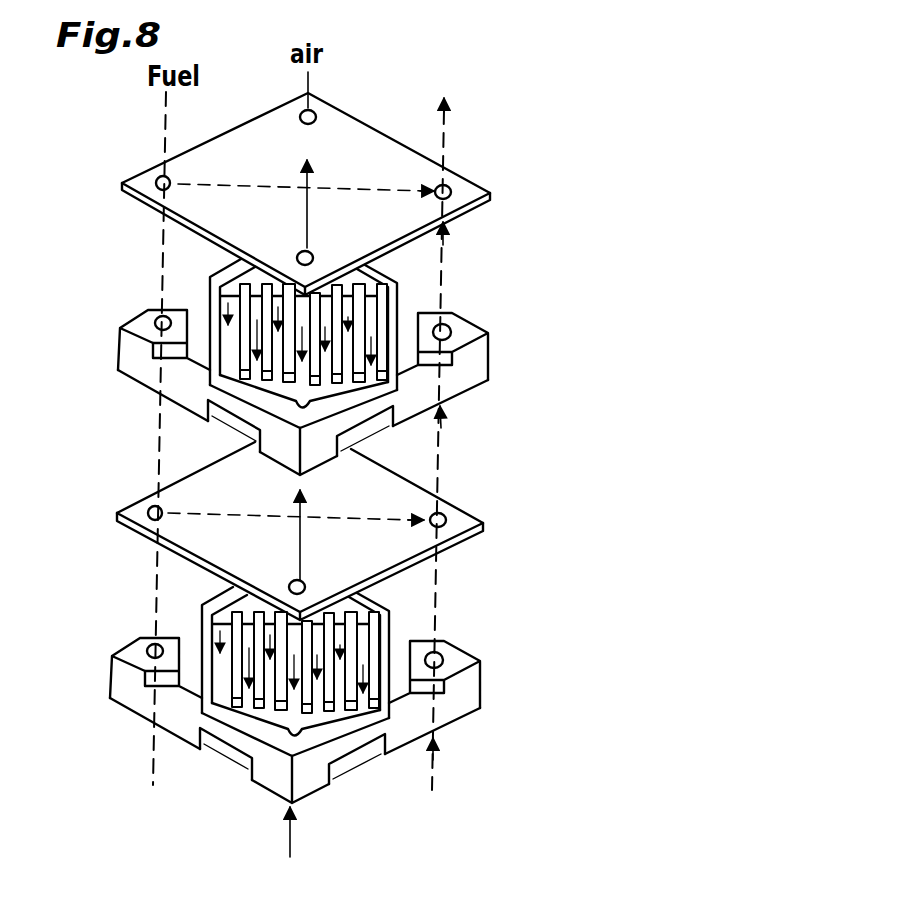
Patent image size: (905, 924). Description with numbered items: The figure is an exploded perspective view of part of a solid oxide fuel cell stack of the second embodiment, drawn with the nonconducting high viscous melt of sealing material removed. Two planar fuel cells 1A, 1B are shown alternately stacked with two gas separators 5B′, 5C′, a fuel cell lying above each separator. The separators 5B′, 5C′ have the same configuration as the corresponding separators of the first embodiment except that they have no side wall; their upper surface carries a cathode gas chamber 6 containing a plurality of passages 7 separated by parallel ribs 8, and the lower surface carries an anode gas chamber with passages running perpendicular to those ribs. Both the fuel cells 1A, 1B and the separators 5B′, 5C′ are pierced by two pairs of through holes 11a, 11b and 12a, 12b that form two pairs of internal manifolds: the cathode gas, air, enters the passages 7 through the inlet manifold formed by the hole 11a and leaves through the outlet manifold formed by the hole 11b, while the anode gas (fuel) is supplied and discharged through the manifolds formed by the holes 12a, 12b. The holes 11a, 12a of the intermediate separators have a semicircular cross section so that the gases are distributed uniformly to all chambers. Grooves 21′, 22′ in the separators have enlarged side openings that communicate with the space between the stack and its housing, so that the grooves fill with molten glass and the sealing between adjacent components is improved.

The planar fuel cell 1A is at (466, 190).
The planar fuel cell 1B is at (470, 518).
The gas separator 5B′ is at (475, 364).
The gas separator 5C′ is at (462, 697).
The cathode gas chamber 6 is at (335, 405).
The passages 7 is at (222, 352).
The ribs 8 is at (213, 284).
The through hole (cathode gas inlet manifold) 11a is at (313, 114).
The through hole (cathode gas outlet manifold) 11b is at (300, 257).
The through hole (anode gas inlet manifold) 12a is at (162, 177).
The through hole (anode gas outlet manifold) 12b is at (449, 187).
The groove 21′ is at (411, 321).
The groove 22′ is at (233, 430).